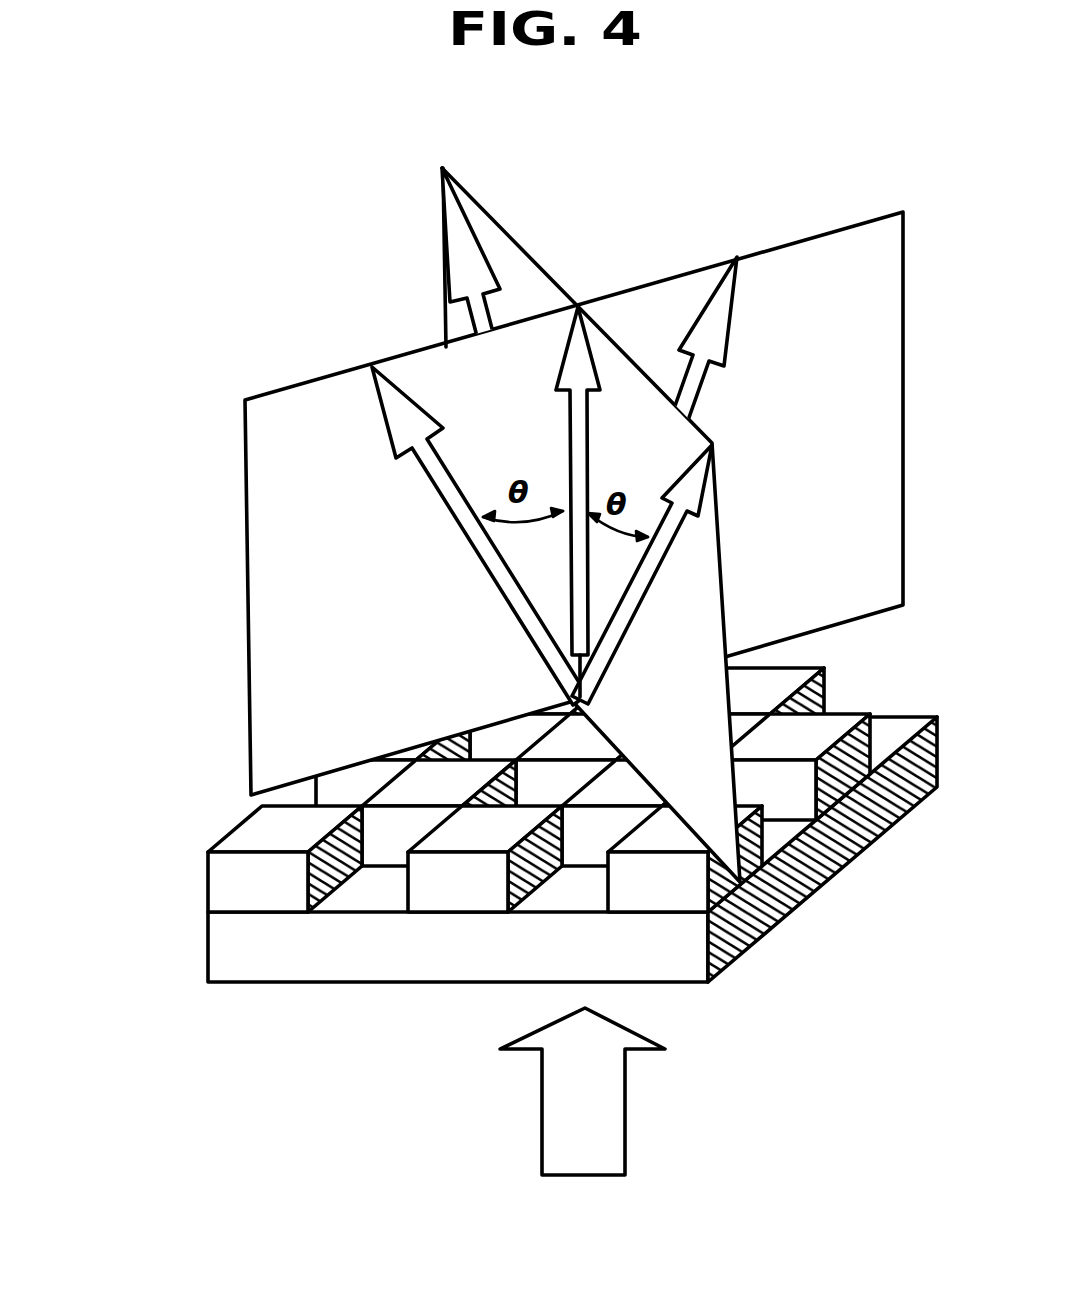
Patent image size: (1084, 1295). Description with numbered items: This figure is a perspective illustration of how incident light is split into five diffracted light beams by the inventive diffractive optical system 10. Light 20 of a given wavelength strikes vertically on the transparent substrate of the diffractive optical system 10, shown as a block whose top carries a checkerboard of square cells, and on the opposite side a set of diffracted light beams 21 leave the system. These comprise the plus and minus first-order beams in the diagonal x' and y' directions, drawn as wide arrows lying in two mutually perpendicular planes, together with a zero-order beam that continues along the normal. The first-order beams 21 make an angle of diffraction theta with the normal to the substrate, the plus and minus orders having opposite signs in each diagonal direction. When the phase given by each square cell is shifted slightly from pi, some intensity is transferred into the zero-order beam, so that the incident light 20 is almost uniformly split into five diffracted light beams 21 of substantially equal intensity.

The diffractive optical system 10 is at (176, 961).
The incident light 20 is at (626, 1113).
The diffracted light beams 21 is at (763, 423).